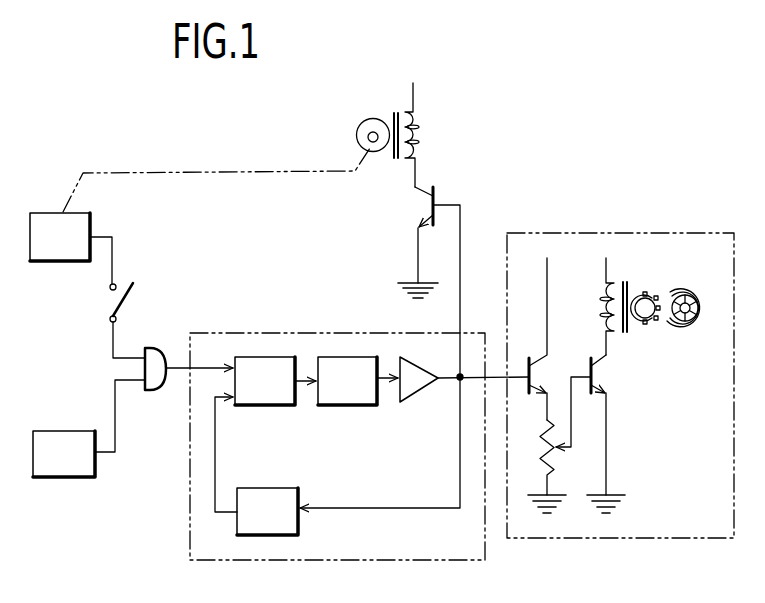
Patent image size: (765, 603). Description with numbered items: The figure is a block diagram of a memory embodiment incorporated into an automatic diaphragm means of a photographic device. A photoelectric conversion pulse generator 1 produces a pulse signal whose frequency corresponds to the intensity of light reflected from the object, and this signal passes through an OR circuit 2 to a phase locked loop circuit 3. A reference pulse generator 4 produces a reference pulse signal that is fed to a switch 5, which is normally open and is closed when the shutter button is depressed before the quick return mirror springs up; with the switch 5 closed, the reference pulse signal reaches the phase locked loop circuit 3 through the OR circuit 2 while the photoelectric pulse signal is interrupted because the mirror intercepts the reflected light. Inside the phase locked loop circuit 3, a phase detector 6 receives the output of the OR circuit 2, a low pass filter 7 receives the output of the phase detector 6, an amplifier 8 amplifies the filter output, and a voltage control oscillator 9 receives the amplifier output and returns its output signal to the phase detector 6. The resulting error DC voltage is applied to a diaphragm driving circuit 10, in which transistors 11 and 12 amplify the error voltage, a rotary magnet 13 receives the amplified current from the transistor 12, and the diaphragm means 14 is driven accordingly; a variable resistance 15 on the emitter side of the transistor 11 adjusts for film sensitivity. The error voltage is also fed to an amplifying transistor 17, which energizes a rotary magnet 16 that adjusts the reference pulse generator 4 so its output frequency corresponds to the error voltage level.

The photoelectric conversion pulse generator 1 is at (72, 466).
The OR circuit 2 is at (143, 366).
The phase locked loop circuit 3 is at (305, 333).
The reference pulse generator 4 is at (52, 228).
The switch 5 is at (112, 303).
The phase detector 6 is at (265, 390).
The low pass filter 7 is at (338, 392).
The amplifier 8 is at (413, 377).
The voltage control oscillator 9 is at (280, 516).
The diaphragm driving circuit 10 is at (592, 233).
The transistor 11 is at (555, 360).
The transistor 12 is at (597, 376).
The rotary magnet 13 is at (633, 292).
The diaphragm means 14 is at (690, 330).
The variable resistance 15 is at (553, 455).
The rotary magnet 16 is at (390, 117).
The amplifying transistor 17 is at (420, 207).